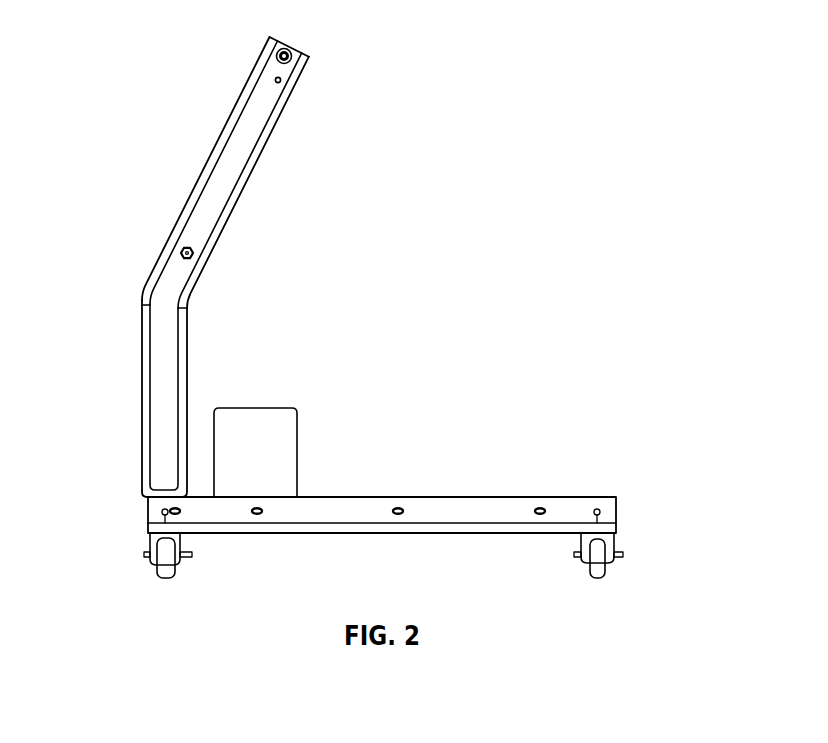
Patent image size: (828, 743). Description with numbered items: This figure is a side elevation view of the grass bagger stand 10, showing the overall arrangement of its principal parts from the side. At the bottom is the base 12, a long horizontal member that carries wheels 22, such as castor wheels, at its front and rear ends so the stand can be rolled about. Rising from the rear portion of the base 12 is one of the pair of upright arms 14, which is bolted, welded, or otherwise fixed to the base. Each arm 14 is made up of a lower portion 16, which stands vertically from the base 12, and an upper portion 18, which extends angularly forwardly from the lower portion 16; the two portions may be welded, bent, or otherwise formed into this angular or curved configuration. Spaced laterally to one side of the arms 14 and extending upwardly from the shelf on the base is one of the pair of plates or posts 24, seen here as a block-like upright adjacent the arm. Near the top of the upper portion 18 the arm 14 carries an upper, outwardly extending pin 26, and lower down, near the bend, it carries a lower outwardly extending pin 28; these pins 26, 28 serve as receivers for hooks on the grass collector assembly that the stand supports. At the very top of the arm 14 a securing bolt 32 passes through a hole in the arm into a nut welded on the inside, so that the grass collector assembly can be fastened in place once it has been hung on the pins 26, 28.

The grass bagger stand 10 is at (383, 298).
The base 12 is at (482, 533).
The upright arm 14 is at (222, 259).
The lower portion 16 is at (142, 416).
The upper portion 18 is at (213, 146).
The wheel 22 is at (156, 573).
The plate or post 24 is at (280, 442).
The upper pin 26 is at (282, 82).
The lower pin 28 is at (192, 255).
The securing bolt 32 is at (291, 53).